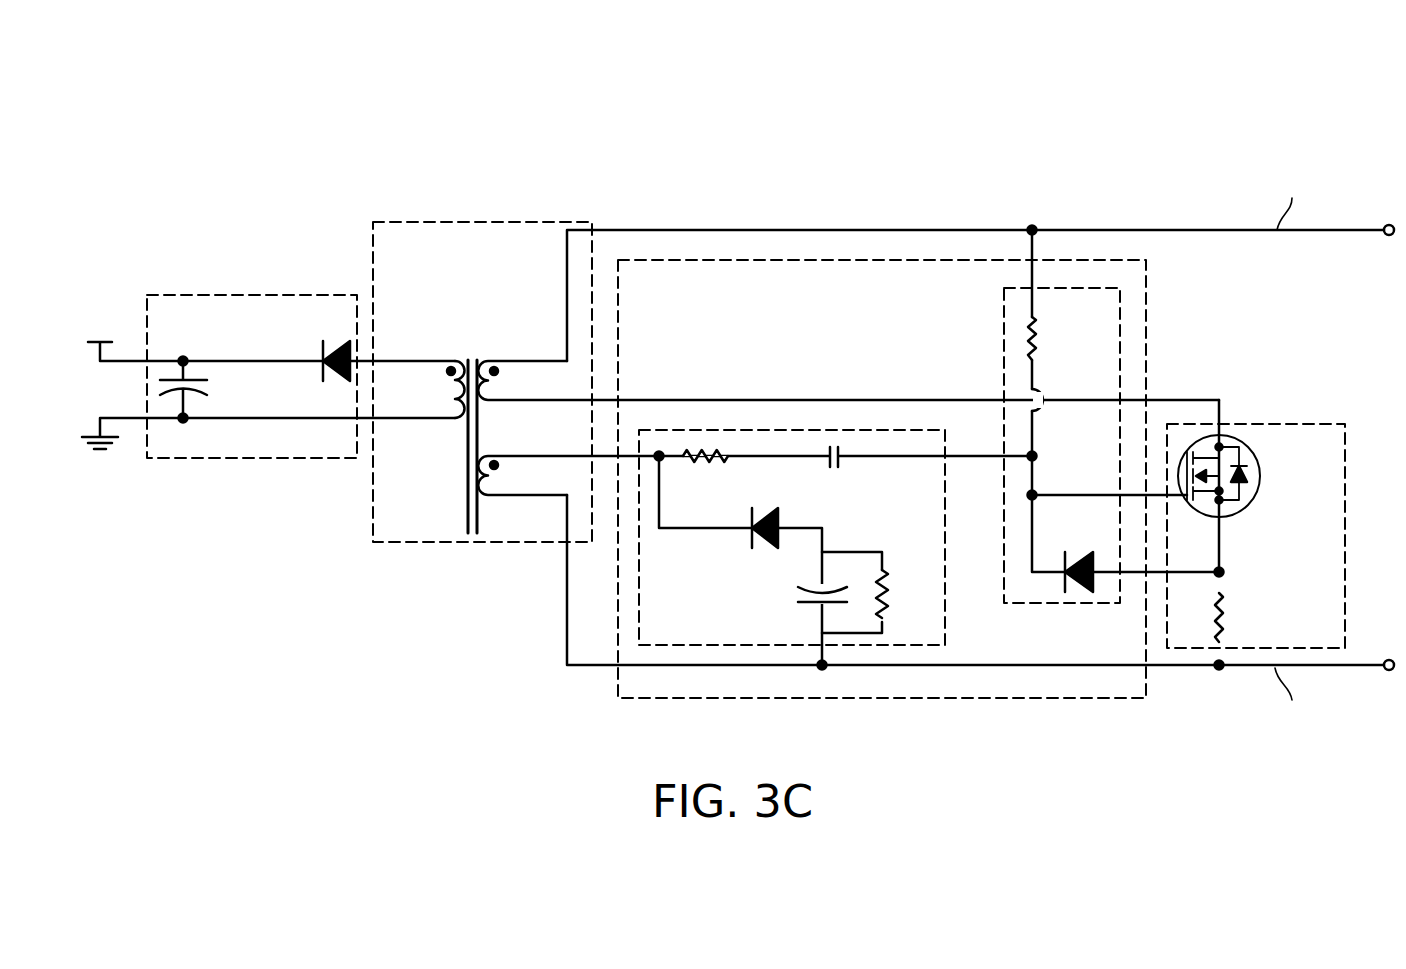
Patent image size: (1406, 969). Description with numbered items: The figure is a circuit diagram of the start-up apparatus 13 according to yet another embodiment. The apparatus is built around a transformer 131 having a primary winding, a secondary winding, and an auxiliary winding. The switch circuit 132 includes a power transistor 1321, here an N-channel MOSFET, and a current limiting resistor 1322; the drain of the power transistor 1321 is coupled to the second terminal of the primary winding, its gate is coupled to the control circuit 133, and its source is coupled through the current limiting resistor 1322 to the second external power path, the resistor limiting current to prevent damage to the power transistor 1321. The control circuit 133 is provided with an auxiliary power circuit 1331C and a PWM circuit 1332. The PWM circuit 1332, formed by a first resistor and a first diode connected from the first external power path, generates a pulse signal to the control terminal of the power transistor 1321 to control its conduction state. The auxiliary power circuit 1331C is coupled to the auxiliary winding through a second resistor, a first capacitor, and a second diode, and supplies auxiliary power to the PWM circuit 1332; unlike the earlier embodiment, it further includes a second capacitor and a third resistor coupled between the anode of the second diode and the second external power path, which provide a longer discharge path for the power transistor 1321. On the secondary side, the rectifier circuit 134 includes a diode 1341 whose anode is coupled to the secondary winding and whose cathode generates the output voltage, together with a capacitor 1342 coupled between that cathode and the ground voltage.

The start-up apparatus 13 is at (228, 566).
The transformer 131 is at (401, 221).
The switch circuit 132 is at (1283, 423).
The power transistor 1321 is at (1240, 506).
The current limiting resistor 1322 is at (1232, 600).
The control circuit 133 is at (822, 130).
The auxiliary power circuit 1331C is at (988, 640).
The PWM circuit 1332 is at (1003, 327).
The rectifier circuit 134 is at (190, 293).
The diode 1341 is at (338, 348).
The capacitor 1342 is at (208, 391).